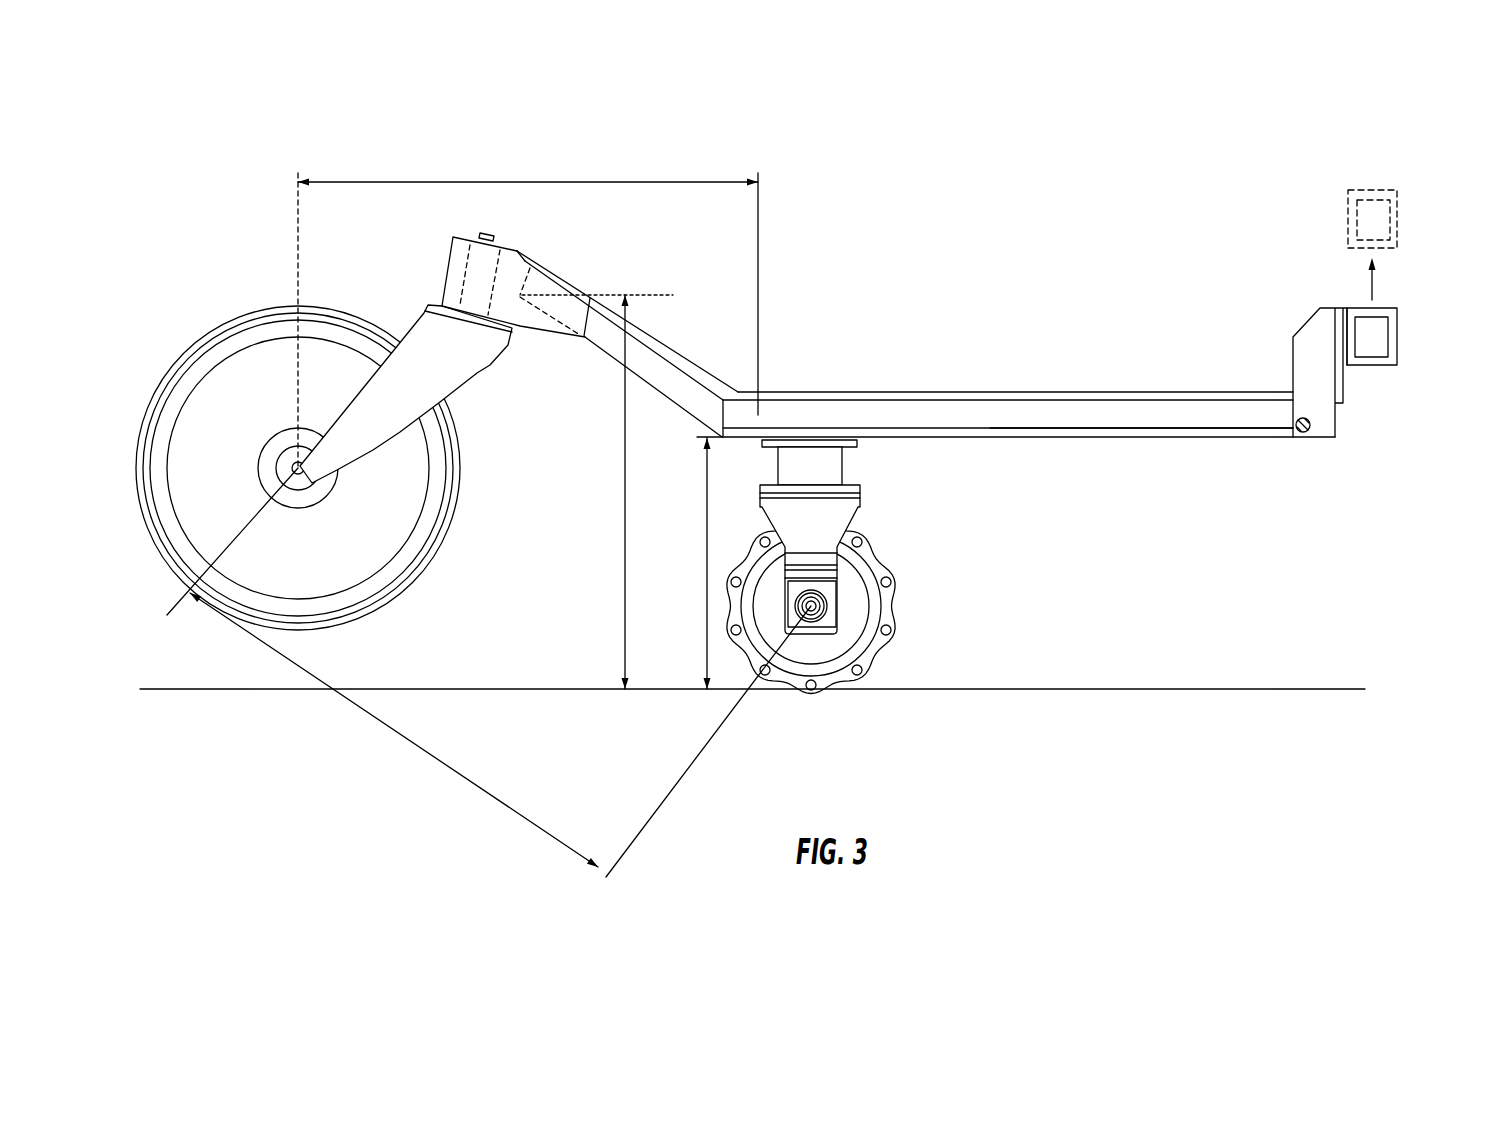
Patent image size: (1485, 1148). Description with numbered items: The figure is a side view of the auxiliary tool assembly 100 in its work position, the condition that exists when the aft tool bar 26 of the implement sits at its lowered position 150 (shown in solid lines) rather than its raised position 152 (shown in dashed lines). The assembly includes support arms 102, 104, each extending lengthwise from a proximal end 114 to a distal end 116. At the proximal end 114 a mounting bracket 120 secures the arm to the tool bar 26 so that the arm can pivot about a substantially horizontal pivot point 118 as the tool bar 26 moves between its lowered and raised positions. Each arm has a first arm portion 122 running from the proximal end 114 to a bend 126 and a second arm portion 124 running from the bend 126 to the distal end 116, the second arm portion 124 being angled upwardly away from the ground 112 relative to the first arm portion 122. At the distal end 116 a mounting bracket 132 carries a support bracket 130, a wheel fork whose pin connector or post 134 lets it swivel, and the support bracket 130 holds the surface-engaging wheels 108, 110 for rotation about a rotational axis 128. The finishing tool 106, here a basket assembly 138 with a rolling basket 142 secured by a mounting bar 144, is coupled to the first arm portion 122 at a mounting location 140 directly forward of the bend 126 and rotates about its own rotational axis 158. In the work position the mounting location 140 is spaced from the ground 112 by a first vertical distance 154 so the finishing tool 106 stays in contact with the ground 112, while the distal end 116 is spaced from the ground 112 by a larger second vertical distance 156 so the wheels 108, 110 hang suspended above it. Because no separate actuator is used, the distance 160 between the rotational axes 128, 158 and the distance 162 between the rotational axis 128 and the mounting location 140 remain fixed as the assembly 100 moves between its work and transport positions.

The aft tool bar 26 is at (1374, 365).
The auxiliary tool assembly 100 is at (952, 236).
The first support arm 102 is at (1016, 415).
The second support arm 104 is at (1016, 415).
The finishing tool 106 is at (883, 567).
The surface-engaging wheel 108 is at (279, 464).
The surface-engaging wheel 110 is at (279, 464).
The ground 112 is at (1100, 688).
The proximal end 114 is at (1267, 418).
The distal end 116 is at (528, 256).
The pivot point 118 is at (1308, 431).
The mounting bracket 120 is at (1308, 340).
The first arm portion 122 is at (990, 429).
The second arm portion 124 is at (672, 355).
The bend 126 is at (740, 392).
The rotational axis 128 is at (291, 468).
The support bracket 130 is at (438, 379).
The mounting bracket 132 is at (530, 327).
The pin connector or post 134 is at (452, 270).
The basket assembly 138 is at (883, 567).
The mounting location 140 is at (750, 444).
The rolling basket 142 is at (905, 625).
The mounting bar 144 is at (828, 468).
The lowered position 150 is at (1420, 325).
The raised position 152 is at (1378, 182).
The first vertical distance 154 is at (707, 600).
The second vertical distance 156 is at (625, 572).
The rotational axis 158 is at (815, 610).
The distance 160 is at (450, 772).
The distance 162 is at (557, 182).